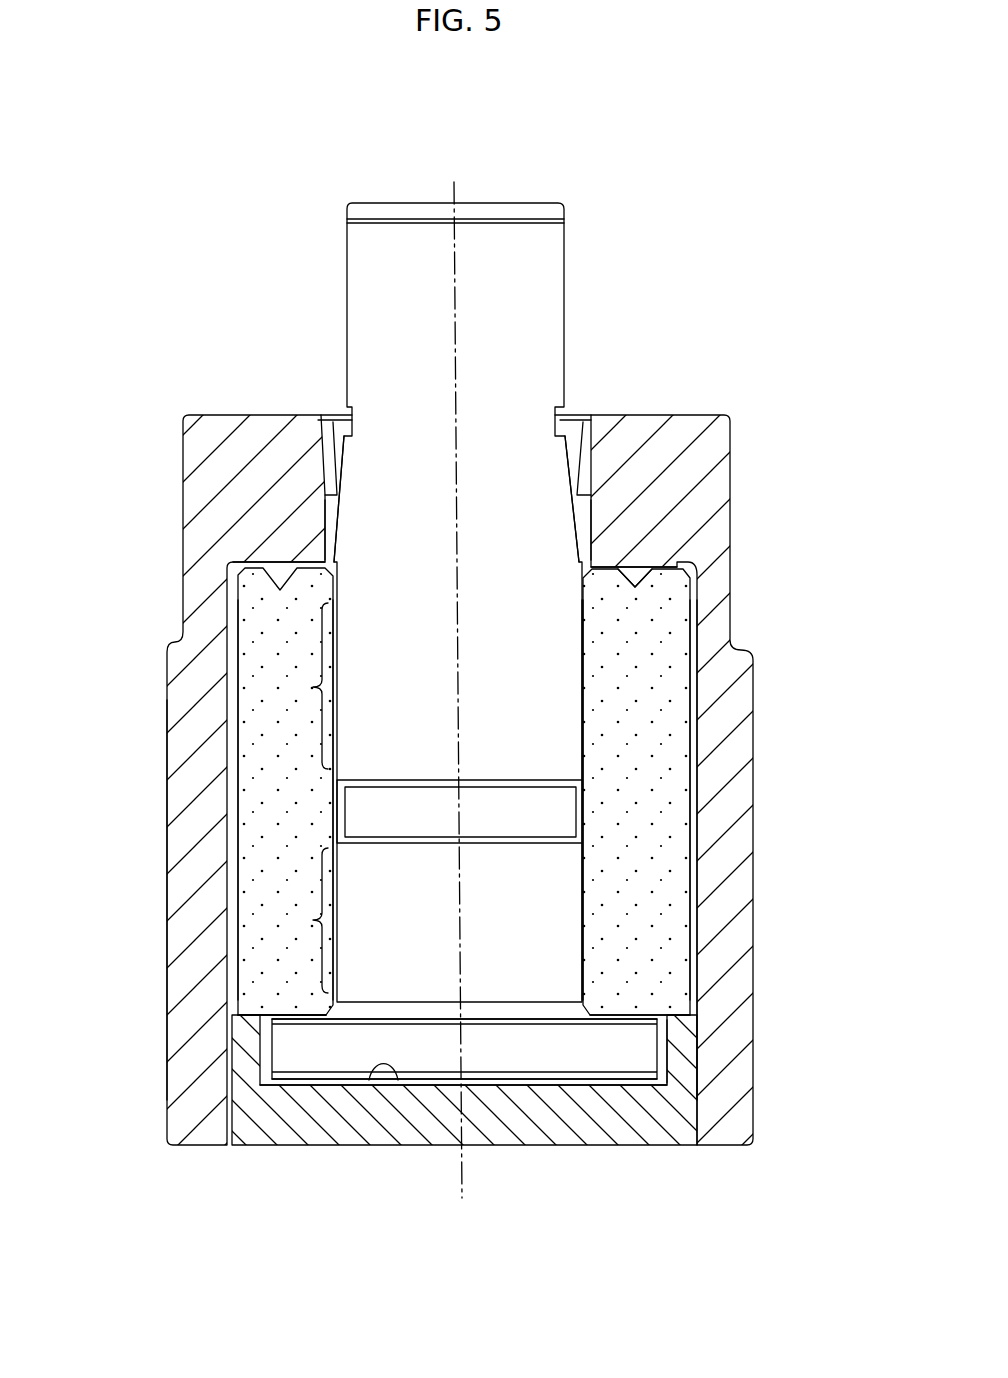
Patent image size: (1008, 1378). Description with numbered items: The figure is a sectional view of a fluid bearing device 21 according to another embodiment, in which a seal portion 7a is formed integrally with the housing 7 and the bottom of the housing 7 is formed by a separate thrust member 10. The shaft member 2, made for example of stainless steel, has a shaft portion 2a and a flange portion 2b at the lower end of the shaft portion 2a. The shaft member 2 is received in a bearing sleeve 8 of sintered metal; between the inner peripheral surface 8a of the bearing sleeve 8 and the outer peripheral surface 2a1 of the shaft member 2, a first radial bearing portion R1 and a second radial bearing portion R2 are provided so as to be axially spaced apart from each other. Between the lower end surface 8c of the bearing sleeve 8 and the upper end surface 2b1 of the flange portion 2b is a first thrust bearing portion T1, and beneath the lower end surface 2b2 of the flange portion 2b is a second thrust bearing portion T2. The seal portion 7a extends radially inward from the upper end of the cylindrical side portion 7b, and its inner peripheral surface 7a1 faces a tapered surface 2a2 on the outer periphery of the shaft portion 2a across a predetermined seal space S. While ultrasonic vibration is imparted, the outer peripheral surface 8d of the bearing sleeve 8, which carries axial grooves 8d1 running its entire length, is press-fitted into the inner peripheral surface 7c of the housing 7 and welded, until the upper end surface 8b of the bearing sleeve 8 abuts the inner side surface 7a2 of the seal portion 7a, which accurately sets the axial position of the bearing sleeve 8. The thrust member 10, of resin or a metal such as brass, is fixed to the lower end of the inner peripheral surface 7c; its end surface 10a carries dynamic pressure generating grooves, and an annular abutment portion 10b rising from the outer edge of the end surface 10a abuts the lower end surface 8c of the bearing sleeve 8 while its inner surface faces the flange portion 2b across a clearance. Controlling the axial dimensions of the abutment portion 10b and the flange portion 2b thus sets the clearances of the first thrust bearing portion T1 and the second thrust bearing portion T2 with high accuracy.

The shaft member 2 is at (577, 669).
The shaft portion 2a is at (542, 255).
The outer peripheral surface 2a1 is at (583, 640).
The tapered surface 2a2 is at (574, 465).
The flange portion 2b is at (577, 1049).
The upper end surface 2b1 is at (637, 1013).
The lower end surface 2b2 is at (633, 1093).
The housing 7 is at (454, 704).
The seal portion 7a is at (250, 432).
The inner peripheral surface 7a1 is at (340, 510).
The inner side surface 7a2 is at (245, 590).
The side portion 7b is at (195, 772).
The inner peripheral surface 7c is at (693, 792).
The bearing sleeve 8 is at (456, 774).
The inner peripheral surface 8a is at (583, 695).
The upper end surface 8b is at (637, 557).
The lower end surface 8c is at (307, 1018).
The outer peripheral surface 8d is at (697, 871).
The axial groove 8d1 is at (233, 848).
The thrust member 10 is at (557, 1123).
The end surface 10a is at (400, 1085).
The abutment portion 10b is at (680, 1040).
The fluid bearing device 21 is at (750, 375).
The seal space S is at (323, 413).
The first radial bearing portion R1 is at (300, 688).
The second radial bearing portion R2 is at (300, 919).
The first thrust bearing portion T1 is at (288, 1008).
The second thrust bearing portion T2 is at (317, 1083).